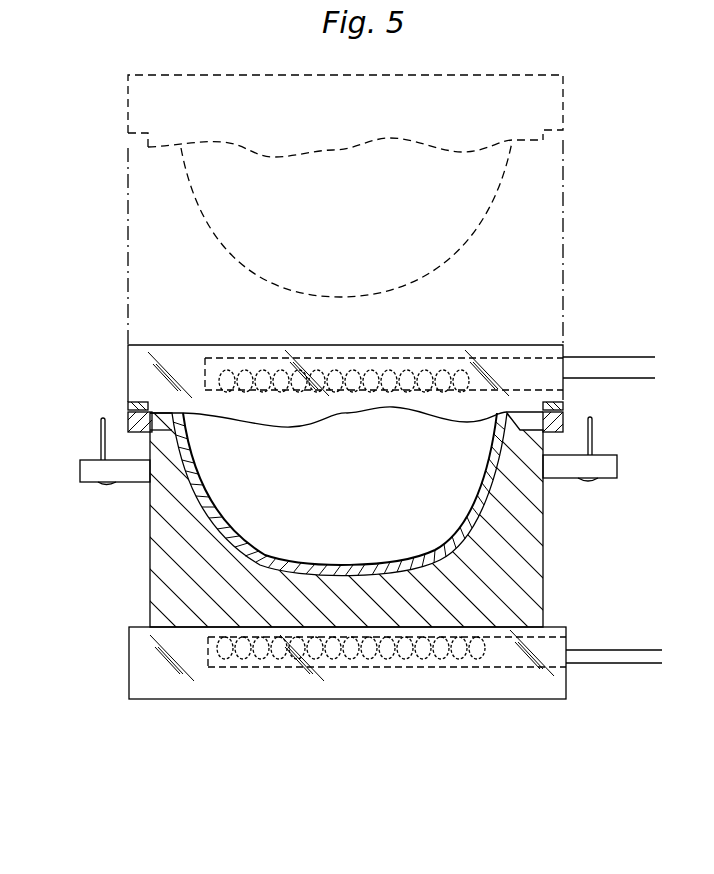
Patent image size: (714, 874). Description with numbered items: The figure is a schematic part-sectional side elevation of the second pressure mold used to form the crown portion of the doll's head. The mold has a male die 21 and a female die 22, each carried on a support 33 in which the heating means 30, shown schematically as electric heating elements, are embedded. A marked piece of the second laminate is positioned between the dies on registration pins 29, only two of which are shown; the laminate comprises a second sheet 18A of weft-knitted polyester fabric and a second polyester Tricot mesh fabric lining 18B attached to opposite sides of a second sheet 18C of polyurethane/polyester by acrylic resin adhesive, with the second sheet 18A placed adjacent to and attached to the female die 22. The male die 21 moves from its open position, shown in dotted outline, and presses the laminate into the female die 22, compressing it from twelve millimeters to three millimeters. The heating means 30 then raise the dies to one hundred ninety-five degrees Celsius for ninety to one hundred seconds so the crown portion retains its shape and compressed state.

The supports 33 is at (188, 355).
The heating means 30 is at (583, 356).
The female die 22 is at (172, 574).
The male die 21 is at (322, 481).
The second polyester Tricot mesh fabric lining 18B is at (145, 401).
The second sheet of polyurethane/polyester 18C is at (125, 422).
The registration pins 29 is at (98, 427).
The second sheet of weft-knitted polyester fabric 18A is at (135, 442).